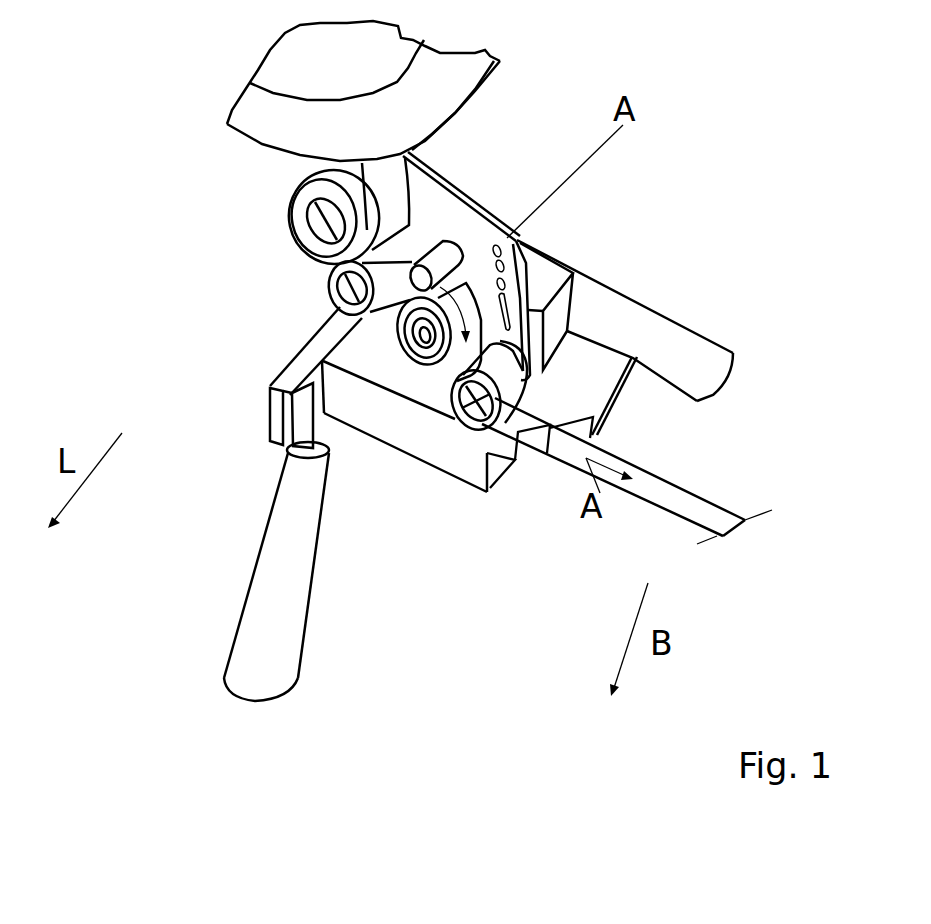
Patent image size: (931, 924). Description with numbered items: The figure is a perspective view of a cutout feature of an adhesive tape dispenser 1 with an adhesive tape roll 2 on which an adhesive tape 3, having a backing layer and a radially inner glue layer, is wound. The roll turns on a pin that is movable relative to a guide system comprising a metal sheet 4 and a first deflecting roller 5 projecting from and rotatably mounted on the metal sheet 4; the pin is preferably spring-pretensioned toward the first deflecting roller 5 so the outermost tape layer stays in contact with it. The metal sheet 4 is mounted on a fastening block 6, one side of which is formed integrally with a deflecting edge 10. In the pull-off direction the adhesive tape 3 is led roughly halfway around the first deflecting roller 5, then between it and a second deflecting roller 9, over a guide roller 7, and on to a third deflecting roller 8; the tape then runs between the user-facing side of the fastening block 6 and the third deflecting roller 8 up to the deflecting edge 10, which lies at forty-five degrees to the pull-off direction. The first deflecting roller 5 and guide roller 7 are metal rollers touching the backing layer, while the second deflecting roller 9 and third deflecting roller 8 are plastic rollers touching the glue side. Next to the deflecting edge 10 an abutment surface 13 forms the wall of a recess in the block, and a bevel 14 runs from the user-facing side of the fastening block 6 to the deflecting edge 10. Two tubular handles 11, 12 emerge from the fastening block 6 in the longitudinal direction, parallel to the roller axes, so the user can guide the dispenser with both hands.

The adhesive tape dispenser 1 is at (170, 268).
The adhesive tape roll 2 is at (273, 107).
The adhesive tape 3 is at (697, 513).
The metal sheet 4 is at (412, 233).
The first deflecting roller 5 is at (289, 194).
The fastening block 6 is at (578, 378).
The guide roller 7 is at (353, 328).
The third deflecting roller 8 is at (466, 428).
The second deflecting roller 9 is at (330, 282).
The deflecting edge 10 is at (541, 458).
The handle 11 is at (267, 562).
The handle 12 is at (670, 353).
The abutment surface 13 is at (489, 489).
The bevel 14 is at (518, 445).